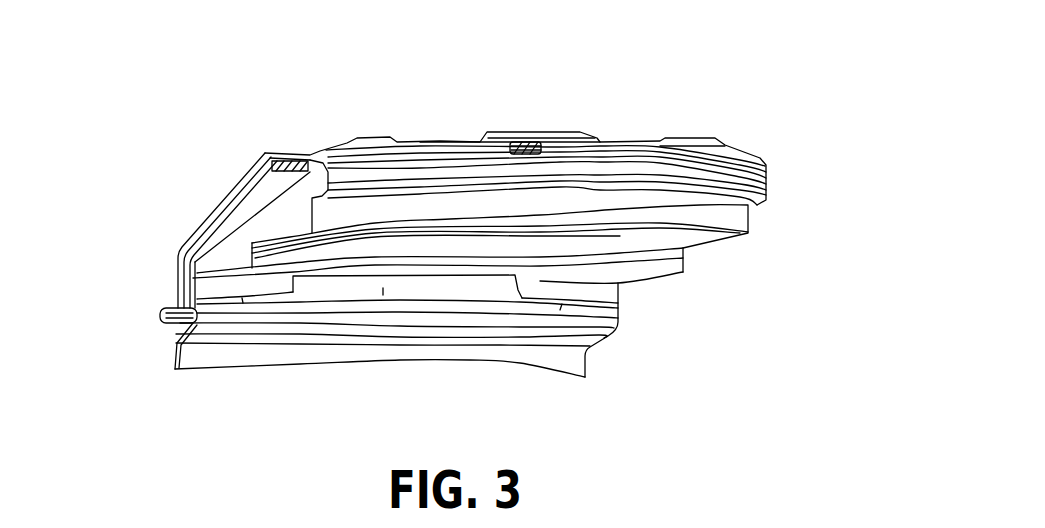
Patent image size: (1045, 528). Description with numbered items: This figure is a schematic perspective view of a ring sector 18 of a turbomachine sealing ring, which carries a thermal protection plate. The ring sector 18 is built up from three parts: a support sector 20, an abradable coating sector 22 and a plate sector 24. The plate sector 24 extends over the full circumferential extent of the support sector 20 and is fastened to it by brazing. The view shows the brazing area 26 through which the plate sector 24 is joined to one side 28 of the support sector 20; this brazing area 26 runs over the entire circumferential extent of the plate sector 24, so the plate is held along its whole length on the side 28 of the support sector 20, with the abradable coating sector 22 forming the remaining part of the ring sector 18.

The ring sector 18 is at (664, 86).
The support sector 20 is at (244, 174).
The abradable coating sector 22 is at (709, 239).
The plate sector 24 is at (565, 368).
The brazing area 26 is at (560, 310).
The side of the support sector 28 is at (213, 295).